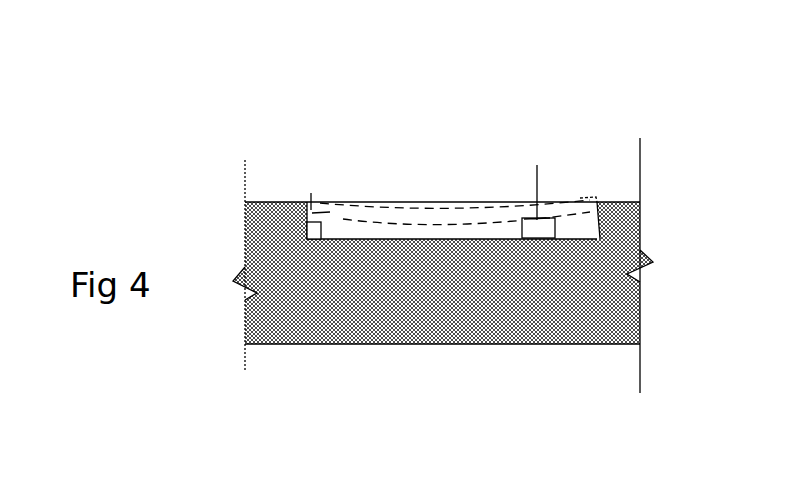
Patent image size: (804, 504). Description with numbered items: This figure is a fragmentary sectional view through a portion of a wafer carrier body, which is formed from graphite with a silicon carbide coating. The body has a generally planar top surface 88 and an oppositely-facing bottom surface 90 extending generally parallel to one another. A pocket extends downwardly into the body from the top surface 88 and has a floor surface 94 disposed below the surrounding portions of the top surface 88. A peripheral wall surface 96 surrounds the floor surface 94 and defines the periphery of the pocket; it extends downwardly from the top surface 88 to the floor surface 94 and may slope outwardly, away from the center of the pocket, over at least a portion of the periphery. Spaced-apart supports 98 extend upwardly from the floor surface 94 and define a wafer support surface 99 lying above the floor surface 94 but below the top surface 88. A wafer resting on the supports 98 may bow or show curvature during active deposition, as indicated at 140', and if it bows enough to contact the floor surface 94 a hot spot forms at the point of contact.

The top surface 88 is at (281, 202).
The bottom surface 90 is at (318, 345).
The floor surface 94 is at (497, 243).
The peripheral wall surface 96 is at (608, 202).
The spaced-apart supports 98 is at (330, 213).
The wafer support surface 99 is at (537, 165).
The wafer bow 140' is at (455, 119).